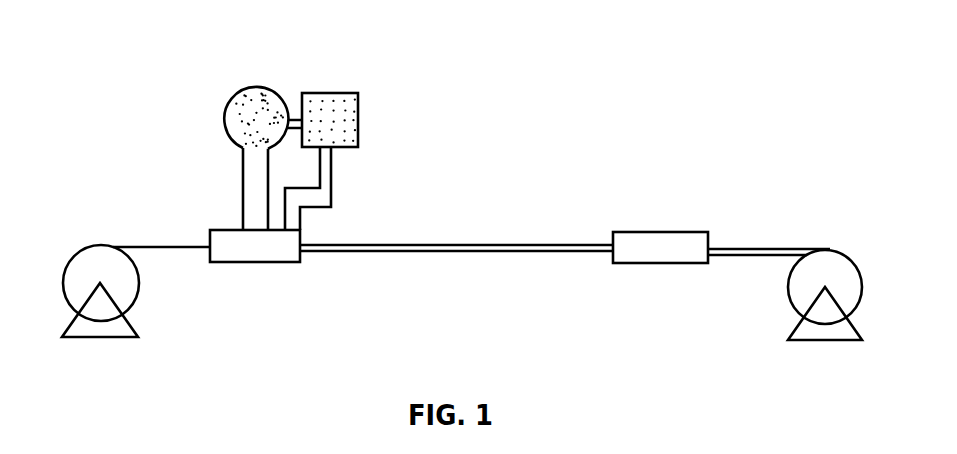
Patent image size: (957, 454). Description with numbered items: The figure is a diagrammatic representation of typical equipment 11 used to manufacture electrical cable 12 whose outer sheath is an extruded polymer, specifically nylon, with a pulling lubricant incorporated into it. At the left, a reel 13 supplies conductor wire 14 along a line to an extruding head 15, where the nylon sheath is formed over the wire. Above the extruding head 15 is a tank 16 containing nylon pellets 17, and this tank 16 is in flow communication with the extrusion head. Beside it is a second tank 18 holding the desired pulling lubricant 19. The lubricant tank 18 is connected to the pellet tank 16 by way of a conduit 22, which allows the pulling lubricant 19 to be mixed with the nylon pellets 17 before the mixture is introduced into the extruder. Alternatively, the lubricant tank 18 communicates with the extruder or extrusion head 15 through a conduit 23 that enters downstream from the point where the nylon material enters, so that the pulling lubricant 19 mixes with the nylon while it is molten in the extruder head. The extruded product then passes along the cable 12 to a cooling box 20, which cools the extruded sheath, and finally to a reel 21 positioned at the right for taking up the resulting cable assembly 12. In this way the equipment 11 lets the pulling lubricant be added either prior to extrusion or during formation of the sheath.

The equipment 11 is at (504, 124).
The electrical cable 12 is at (548, 245).
The reel 13 is at (88, 268).
The conductor wire 14 is at (152, 242).
The extruding head 15 is at (235, 248).
The tank 16 is at (223, 137).
The nylon pellets 17 is at (255, 118).
The tank 18 is at (330, 93).
The pulling lubricant 19 is at (347, 118).
The cooling box 20 is at (628, 240).
The reel 21 is at (847, 267).
The conduit 22 is at (292, 117).
The conduit 23 is at (317, 207).